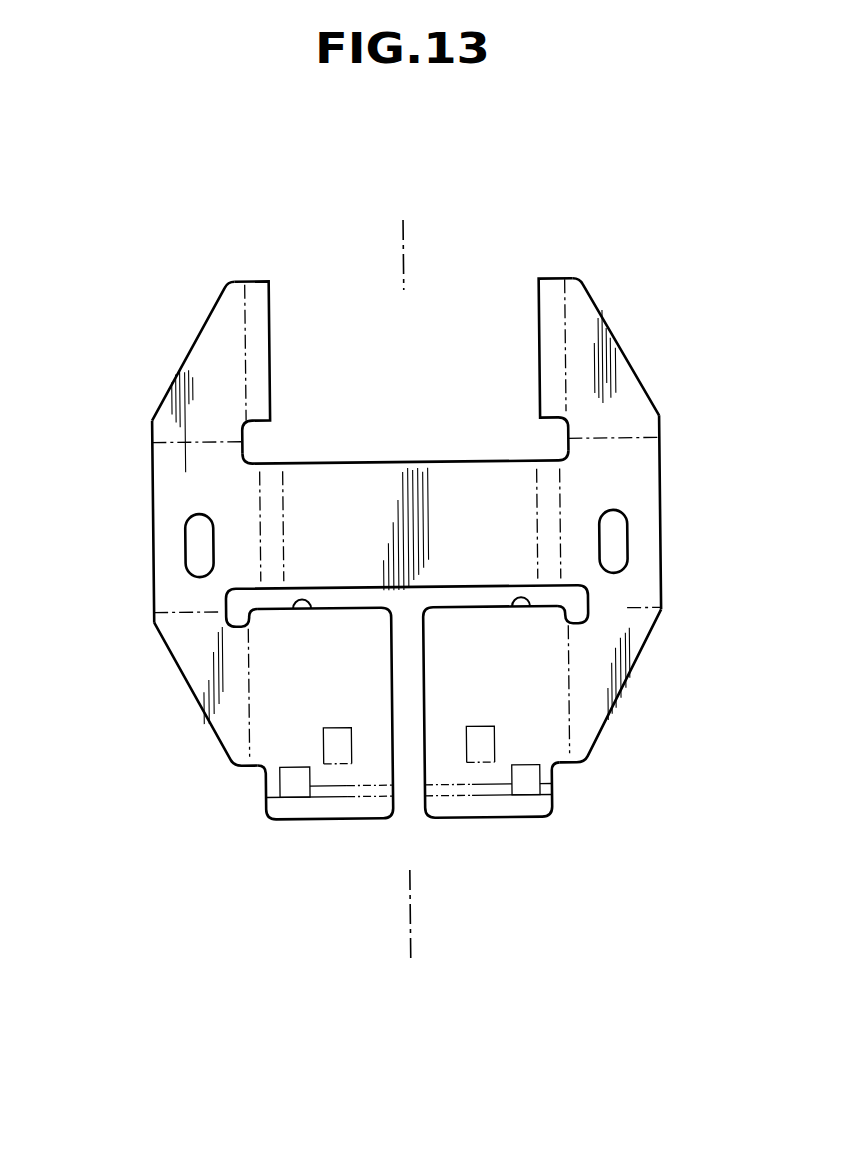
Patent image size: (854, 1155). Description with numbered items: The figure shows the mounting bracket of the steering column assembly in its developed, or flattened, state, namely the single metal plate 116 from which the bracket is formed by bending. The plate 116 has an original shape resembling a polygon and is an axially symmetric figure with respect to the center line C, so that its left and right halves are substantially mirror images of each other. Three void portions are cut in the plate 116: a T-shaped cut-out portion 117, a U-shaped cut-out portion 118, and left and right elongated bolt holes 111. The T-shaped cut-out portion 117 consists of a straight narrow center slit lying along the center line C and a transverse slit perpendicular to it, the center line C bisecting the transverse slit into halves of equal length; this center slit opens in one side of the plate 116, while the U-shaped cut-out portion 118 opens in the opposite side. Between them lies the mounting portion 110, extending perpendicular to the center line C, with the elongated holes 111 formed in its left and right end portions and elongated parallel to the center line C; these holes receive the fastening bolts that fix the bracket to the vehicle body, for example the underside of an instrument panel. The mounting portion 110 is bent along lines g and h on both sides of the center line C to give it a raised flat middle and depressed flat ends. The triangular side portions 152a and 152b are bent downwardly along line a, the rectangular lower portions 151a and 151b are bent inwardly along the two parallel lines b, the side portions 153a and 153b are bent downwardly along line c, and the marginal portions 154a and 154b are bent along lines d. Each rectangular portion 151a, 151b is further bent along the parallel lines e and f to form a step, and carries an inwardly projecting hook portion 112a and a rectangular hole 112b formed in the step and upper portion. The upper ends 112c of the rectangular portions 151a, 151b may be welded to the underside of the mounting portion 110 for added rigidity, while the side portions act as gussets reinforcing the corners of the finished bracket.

The mounting portion 110 is at (324, 506).
The elongated bolt hole 111 is at (185, 556).
The hook portion 112a is at (333, 737).
The rectangular hole 112b is at (293, 794).
The upper end 112c is at (298, 604).
The metal plate 116 is at (663, 472).
The T-shaped cut-out portion 117 is at (462, 592).
The U-shaped cut-out portion 118 is at (462, 460).
The rectangular lower portion 151a is at (275, 750).
The rectangular lower portion 151b is at (548, 748).
The triangular side portion 152a is at (192, 670).
The triangular side portion 152b is at (625, 668).
The side portion 153a is at (203, 368).
The side portion 153b is at (612, 365).
The marginal portion 154a is at (262, 353).
The marginal portion 154b is at (557, 354).
The bending line a is at (153, 630).
The bending line b is at (236, 752).
The bending line c is at (152, 424).
The bending line d is at (249, 292).
The bending line e is at (373, 797).
The bending line f is at (325, 798).
The bending line g is at (285, 559).
The bending line h is at (259, 502).
The center line C is at (408, 589).